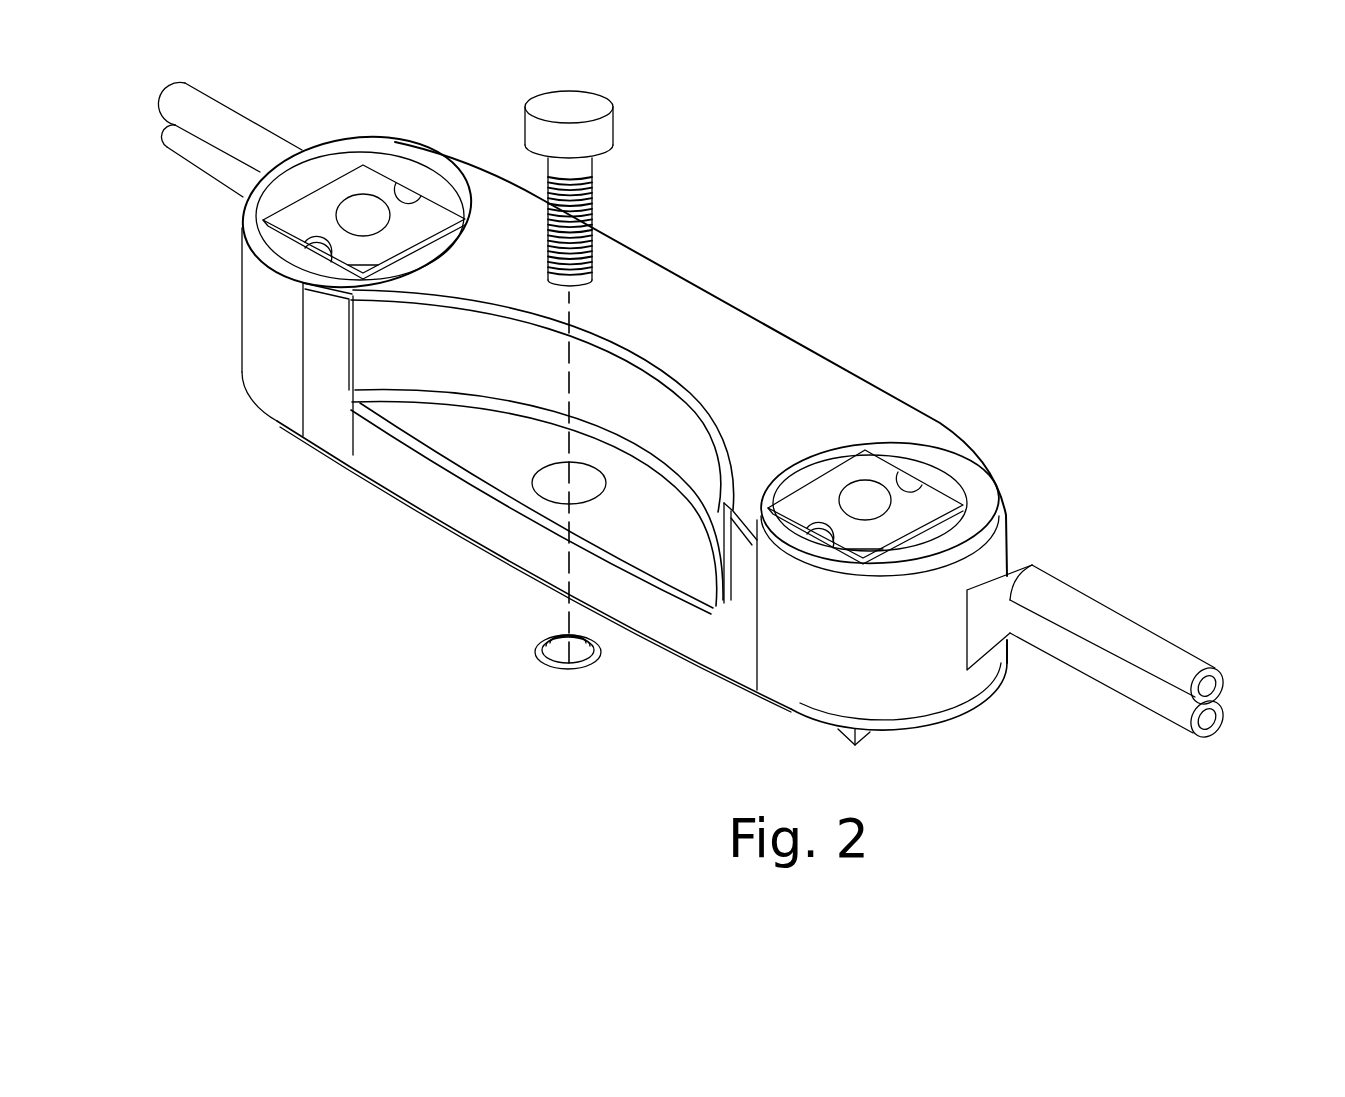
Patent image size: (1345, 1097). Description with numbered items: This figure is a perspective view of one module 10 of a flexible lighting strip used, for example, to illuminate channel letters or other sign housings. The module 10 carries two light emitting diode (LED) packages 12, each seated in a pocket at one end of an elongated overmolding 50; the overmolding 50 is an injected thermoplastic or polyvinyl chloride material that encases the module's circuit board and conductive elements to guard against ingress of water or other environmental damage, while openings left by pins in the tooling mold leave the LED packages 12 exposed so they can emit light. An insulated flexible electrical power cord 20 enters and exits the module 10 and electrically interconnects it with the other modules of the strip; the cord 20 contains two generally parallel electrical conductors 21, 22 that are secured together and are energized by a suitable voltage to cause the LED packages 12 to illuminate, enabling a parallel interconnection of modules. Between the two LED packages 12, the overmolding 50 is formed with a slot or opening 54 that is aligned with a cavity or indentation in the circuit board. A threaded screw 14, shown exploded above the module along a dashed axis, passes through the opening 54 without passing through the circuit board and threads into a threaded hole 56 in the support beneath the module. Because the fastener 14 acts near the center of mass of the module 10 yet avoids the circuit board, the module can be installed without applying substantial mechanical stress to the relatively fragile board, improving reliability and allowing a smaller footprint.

The module 10 is at (790, 288).
The light emitting diode (LED) package 12 is at (360, 205).
The threaded screw 14 is at (598, 130).
The flexible electrical power cord 20 is at (1118, 627).
The electrical conductor 21 is at (1212, 686).
The electrical conductor 22 is at (1212, 722).
The overmolding 50 is at (665, 300).
The slot or opening 54 is at (558, 468).
The threaded hole 56 is at (555, 645).